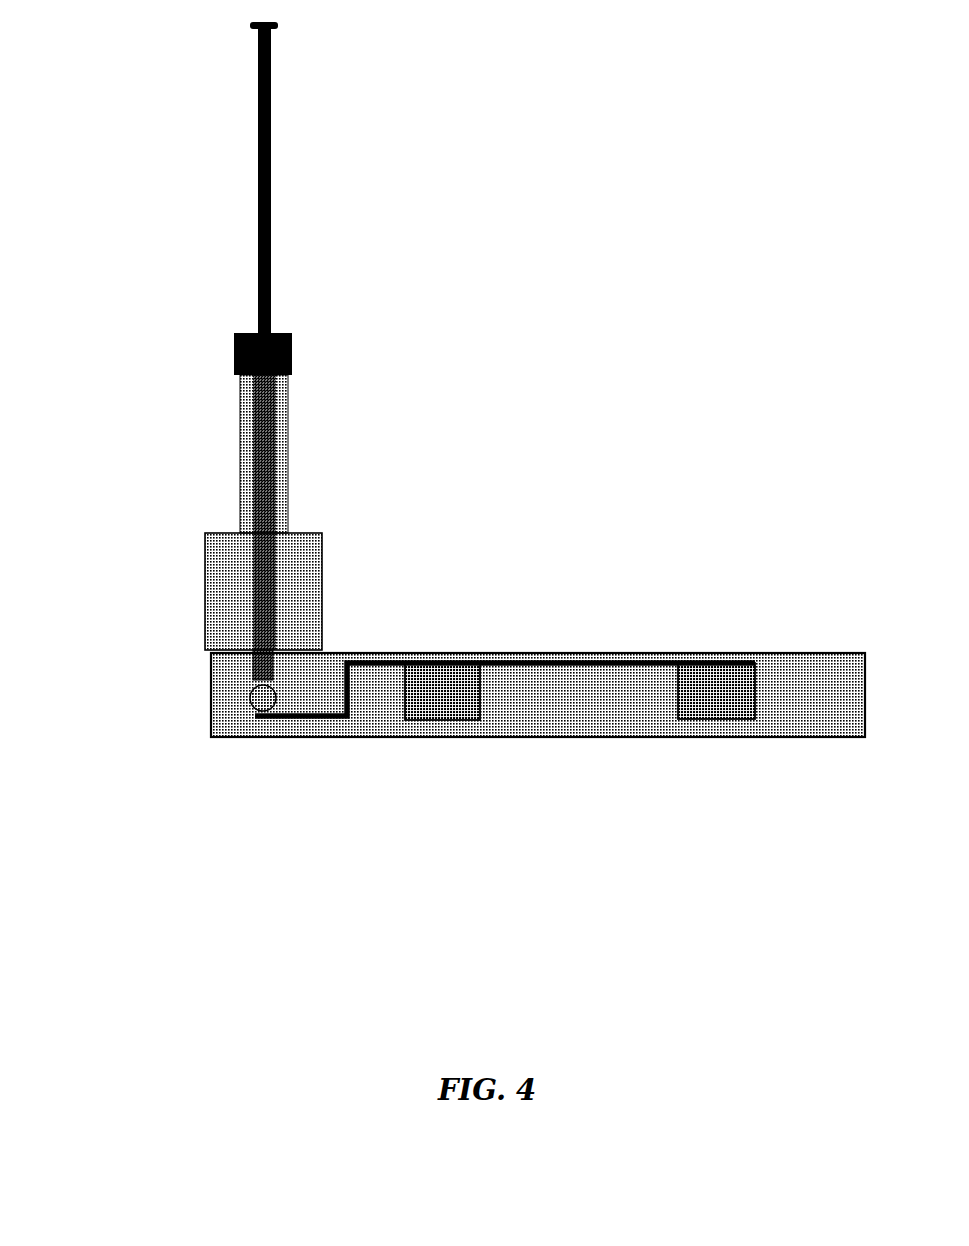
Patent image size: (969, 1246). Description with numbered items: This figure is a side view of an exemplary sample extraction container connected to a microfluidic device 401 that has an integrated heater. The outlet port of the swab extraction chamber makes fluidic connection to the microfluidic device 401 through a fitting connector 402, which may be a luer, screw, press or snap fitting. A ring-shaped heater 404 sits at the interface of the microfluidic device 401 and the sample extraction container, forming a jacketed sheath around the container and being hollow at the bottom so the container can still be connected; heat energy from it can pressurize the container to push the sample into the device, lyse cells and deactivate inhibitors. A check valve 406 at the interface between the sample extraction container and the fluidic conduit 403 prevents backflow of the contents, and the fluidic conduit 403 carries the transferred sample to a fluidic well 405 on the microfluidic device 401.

The microfluidic device 401 is at (182, 277).
The fitting connector 402 is at (276, 663).
The fluidic conduit 403 is at (320, 713).
The ring-shaped heater 404 is at (212, 568).
The fluidic well 405 is at (440, 685).
The check valve 406 is at (254, 692).